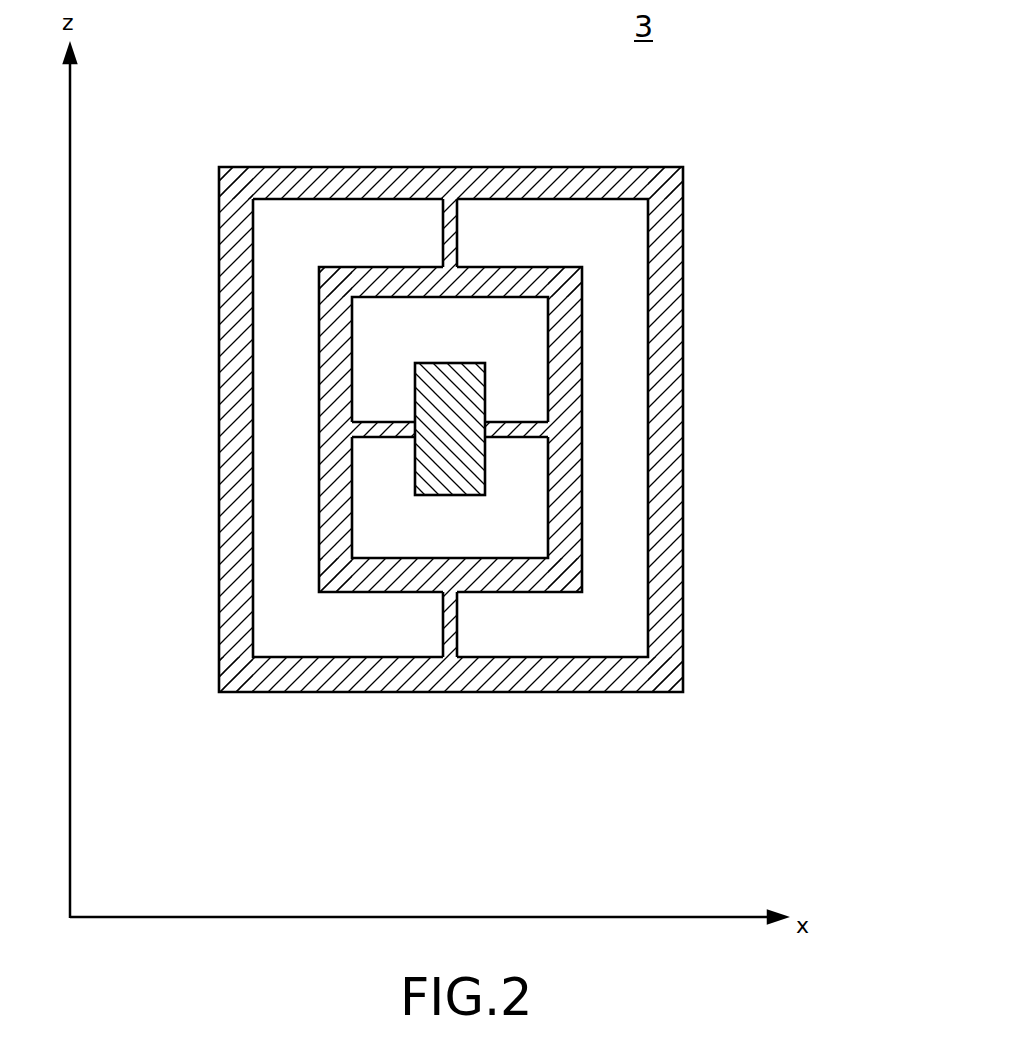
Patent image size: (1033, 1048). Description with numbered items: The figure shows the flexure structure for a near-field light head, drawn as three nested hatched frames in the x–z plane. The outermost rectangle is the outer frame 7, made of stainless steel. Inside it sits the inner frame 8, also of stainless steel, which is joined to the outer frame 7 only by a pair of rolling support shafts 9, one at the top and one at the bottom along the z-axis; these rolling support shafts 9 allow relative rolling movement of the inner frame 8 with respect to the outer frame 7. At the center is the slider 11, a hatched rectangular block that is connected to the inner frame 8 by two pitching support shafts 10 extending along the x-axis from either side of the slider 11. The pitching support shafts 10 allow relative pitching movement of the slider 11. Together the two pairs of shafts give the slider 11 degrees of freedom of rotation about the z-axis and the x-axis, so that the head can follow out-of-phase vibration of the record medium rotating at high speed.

The outer frame 7 is at (233, 232).
The inner frame 8 is at (566, 355).
The rolling support shafts 9 is at (452, 203).
The pitching support shafts 10 is at (378, 437).
The slider 11 is at (455, 462).